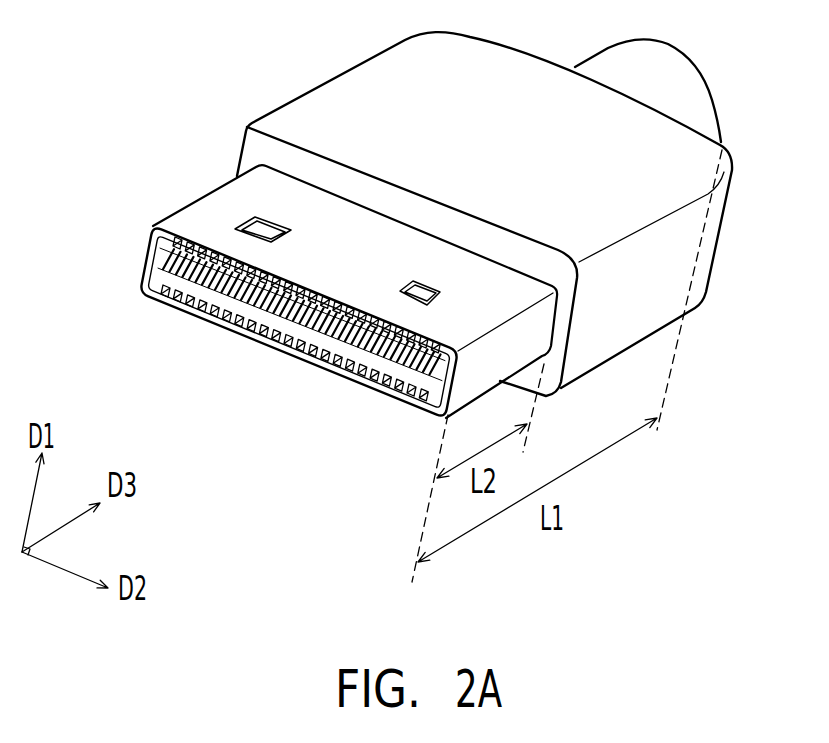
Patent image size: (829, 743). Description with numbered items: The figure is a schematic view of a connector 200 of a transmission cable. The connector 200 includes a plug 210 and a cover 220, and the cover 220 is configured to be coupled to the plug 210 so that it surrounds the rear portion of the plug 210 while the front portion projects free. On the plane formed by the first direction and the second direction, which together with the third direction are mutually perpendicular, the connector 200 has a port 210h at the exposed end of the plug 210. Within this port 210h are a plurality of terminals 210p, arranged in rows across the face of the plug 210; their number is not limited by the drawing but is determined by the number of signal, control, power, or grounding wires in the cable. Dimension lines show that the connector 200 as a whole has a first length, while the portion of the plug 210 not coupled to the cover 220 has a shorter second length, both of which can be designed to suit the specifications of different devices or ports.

The connector 200 is at (774, 573).
The plug 210 is at (214, 210).
The port 210h is at (167, 256).
The terminals 210p is at (378, 381).
The cover 220 is at (366, 103).